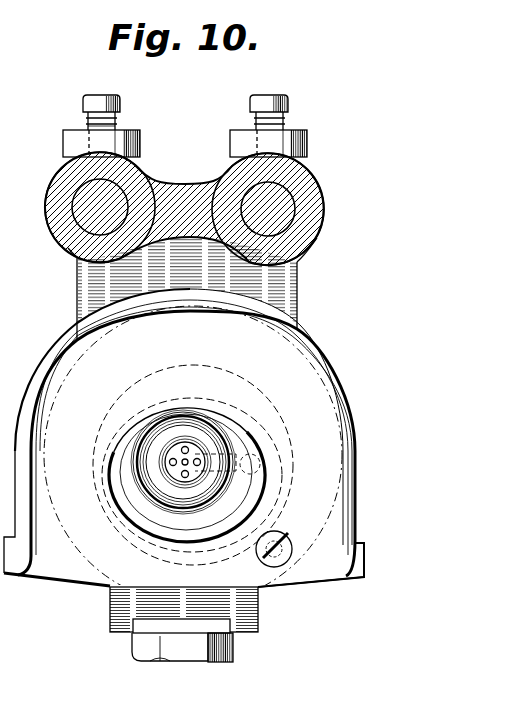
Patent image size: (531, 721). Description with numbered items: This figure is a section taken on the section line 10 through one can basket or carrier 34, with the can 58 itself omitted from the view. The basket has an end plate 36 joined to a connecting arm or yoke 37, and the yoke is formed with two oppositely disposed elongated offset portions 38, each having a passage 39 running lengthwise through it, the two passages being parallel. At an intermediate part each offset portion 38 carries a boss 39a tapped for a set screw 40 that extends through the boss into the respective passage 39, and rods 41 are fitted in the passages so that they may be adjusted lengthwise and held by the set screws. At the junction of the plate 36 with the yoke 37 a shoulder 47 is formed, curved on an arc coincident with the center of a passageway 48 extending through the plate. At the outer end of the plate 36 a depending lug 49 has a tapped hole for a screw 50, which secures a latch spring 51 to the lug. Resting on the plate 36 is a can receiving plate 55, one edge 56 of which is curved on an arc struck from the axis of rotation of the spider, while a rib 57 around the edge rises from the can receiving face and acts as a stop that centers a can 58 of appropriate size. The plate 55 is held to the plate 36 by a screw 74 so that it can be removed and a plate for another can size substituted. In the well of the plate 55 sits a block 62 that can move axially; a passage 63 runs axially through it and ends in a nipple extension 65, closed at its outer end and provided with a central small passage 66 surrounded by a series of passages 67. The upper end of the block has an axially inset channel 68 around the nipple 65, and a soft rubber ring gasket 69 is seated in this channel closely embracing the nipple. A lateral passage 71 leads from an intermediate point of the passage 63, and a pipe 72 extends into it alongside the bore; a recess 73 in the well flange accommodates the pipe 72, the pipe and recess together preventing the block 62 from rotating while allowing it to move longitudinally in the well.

The valve assembly 10 is at (0, 93).
The can basket 34 is at (297, 279).
The end plate 36 is at (60, 250).
The connecting arm or yoke 37 is at (180, 196).
The offset portion 38 is at (62, 183).
The passage 39 is at (67, 250).
The boss 39a is at (231, 147).
The set screw 40 is at (249, 103).
The rod 41 is at (72, 205).
The shoulder 47 is at (161, 242).
The passageway 48 is at (152, 370).
The lug 49 is at (130, 602).
The screw 50 is at (233, 657).
The latch spring 51 is at (130, 622).
The can receiving plate 55 is at (100, 527).
The edge 56 is at (312, 586).
The rib 57 is at (0, 133).
The can 58 is at (171, 302).
The block 62 is at (237, 407).
The passage 63 is at (48, 224).
The nipple extension 65 is at (176, 456).
The central small passage 66 is at (181, 477).
The passages 67 is at (199, 466).
The channel 68 is at (145, 440).
The ring gasket 69 is at (162, 432).
The passage 71 is at (214, 425).
The pipe 72 is at (262, 462).
The recess 73 is at (270, 432).
The screw 74 is at (276, 540).